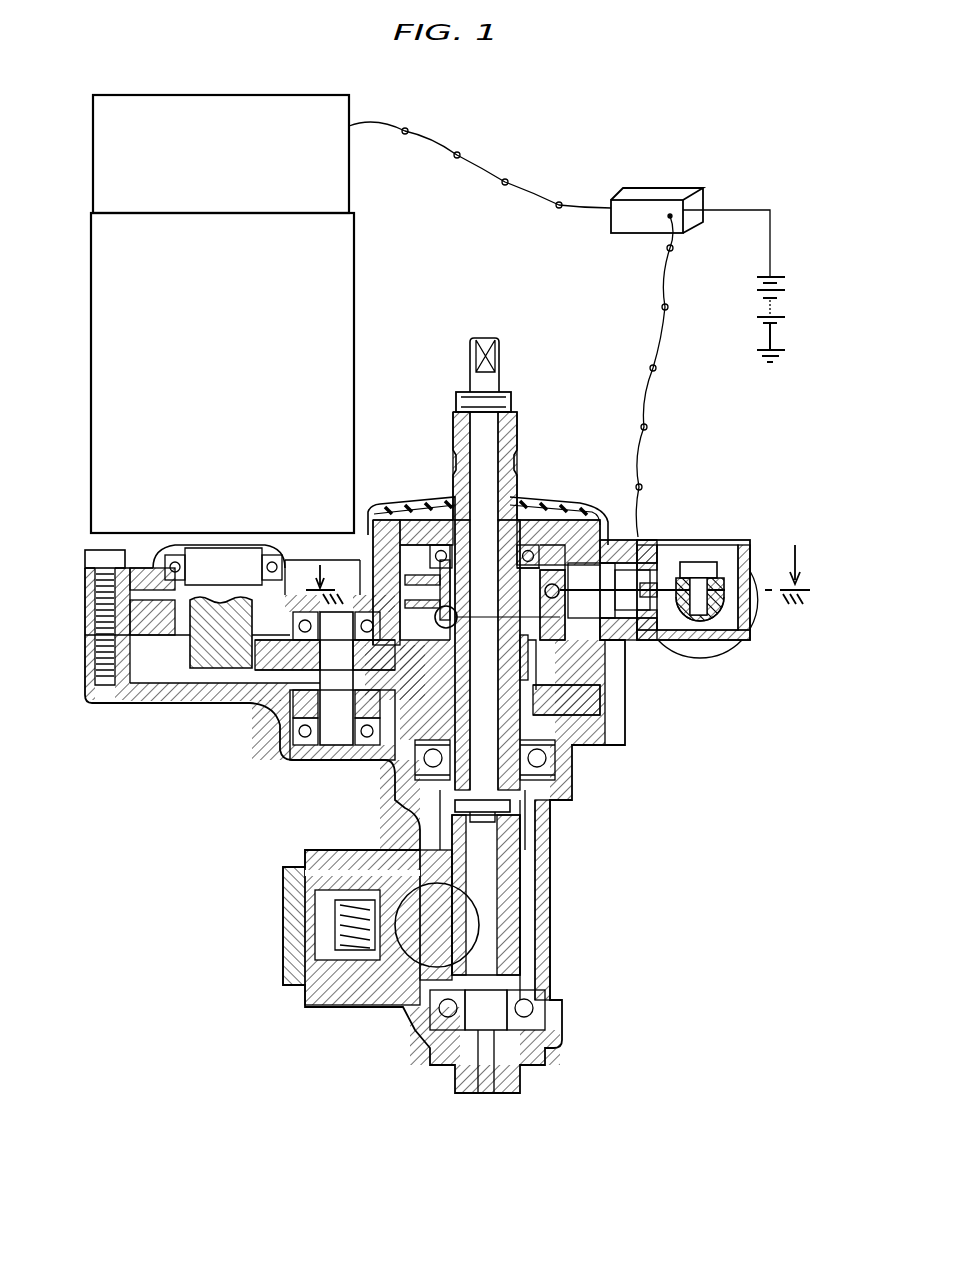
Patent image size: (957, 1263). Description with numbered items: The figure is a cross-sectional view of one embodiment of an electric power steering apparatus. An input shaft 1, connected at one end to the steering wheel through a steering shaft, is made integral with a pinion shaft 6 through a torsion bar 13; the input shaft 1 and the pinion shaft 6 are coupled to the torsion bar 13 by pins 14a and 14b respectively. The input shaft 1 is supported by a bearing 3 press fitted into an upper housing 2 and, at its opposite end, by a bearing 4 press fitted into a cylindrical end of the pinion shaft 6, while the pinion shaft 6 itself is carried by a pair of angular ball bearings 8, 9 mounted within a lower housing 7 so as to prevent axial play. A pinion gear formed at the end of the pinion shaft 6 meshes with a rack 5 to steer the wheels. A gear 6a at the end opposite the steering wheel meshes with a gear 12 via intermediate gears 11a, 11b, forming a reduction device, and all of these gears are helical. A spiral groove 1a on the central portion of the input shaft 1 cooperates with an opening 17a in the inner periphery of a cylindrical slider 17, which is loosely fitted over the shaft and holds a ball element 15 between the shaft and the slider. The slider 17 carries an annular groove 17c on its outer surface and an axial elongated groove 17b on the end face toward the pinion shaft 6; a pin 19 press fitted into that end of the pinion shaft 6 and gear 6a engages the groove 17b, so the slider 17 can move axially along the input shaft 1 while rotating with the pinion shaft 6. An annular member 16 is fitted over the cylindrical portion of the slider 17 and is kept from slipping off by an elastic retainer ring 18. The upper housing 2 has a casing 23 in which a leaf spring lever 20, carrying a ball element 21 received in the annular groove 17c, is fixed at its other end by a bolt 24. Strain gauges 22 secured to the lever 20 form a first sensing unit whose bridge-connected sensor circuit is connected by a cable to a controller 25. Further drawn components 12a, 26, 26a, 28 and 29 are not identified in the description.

The input shaft 1 is at (515, 420).
The spiral groove 1a is at (535, 620).
The upper housing 2 is at (595, 515).
The bearing 3 is at (537, 525).
The bearing 4 is at (440, 770).
The rack 5 is at (415, 955).
The pinion shaft 6 is at (520, 895).
The gear 6a is at (595, 706).
The lower housing 7 is at (553, 935).
The angular ball bearing 8 is at (555, 770).
The angular ball bearing 9 is at (538, 995).
The intermediate gear 11a is at (300, 690).
The intermediate gear 11b is at (260, 660).
The gear 12 is at (355, 283).
The motor shaft 12a is at (205, 670).
The torsion bar 13 is at (485, 455).
The pin 14a is at (503, 393).
The pin 14b is at (505, 812).
The ball element 15 is at (400, 520).
The annular member 16 is at (435, 620).
The cylindrical slider 17 is at (562, 572).
The opening 17a is at (442, 560).
The axial elongated groove 17b is at (540, 645).
The annular groove 17c is at (553, 548).
The elastic retainer ring 18 is at (385, 760).
The pin 19 is at (536, 680).
The leaf spring lever 20 is at (592, 590).
The ball element 21 is at (568, 592).
The strain gauges 22 is at (652, 580).
The casing 23 is at (735, 562).
The bolt 24 is at (700, 562).
The controller 25 is at (727, 590).
The switch lever 26 is at (715, 615).
The lever arc 26a is at (755, 630).
The control unit 28 is at (660, 187).
The battery 29 is at (752, 287).